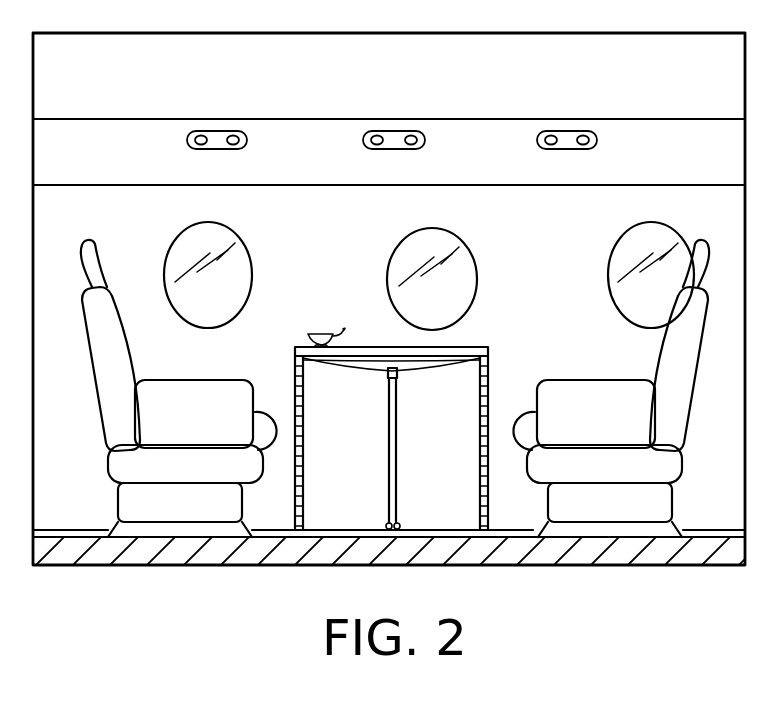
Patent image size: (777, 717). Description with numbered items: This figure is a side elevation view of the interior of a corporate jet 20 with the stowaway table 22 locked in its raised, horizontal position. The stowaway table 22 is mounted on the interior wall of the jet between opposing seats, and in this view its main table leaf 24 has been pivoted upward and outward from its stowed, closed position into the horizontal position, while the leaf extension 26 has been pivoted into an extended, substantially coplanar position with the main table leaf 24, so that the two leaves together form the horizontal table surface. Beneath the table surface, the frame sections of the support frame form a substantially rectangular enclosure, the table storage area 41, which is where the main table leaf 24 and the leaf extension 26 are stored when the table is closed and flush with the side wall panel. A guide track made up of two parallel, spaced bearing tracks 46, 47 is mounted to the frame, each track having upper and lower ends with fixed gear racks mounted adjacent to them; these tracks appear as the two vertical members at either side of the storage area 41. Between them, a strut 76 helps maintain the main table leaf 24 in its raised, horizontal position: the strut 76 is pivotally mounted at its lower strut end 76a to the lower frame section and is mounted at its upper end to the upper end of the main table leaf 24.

The jet 20 is at (558, 83).
The stowaway table 22 is at (394, 388).
The main table leaf 24 is at (391, 301).
The leaf extension 26 is at (382, 347).
The table storage area 41 is at (451, 483).
The bearing track 46 is at (489, 383).
The bearing track 47 is at (294, 378).
The strut 76 is at (402, 448).
The lower strut end 76a is at (432, 396).